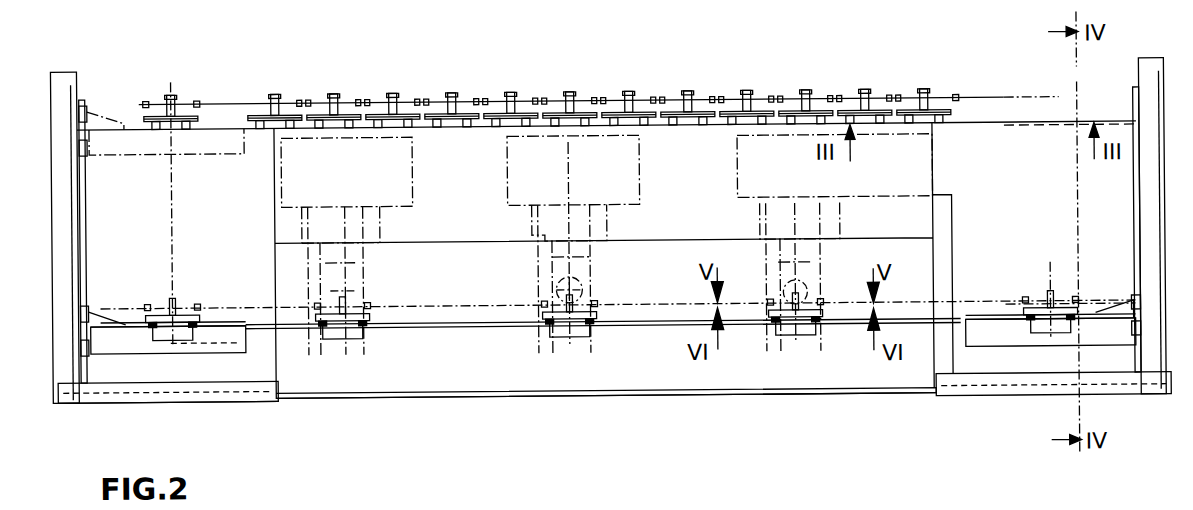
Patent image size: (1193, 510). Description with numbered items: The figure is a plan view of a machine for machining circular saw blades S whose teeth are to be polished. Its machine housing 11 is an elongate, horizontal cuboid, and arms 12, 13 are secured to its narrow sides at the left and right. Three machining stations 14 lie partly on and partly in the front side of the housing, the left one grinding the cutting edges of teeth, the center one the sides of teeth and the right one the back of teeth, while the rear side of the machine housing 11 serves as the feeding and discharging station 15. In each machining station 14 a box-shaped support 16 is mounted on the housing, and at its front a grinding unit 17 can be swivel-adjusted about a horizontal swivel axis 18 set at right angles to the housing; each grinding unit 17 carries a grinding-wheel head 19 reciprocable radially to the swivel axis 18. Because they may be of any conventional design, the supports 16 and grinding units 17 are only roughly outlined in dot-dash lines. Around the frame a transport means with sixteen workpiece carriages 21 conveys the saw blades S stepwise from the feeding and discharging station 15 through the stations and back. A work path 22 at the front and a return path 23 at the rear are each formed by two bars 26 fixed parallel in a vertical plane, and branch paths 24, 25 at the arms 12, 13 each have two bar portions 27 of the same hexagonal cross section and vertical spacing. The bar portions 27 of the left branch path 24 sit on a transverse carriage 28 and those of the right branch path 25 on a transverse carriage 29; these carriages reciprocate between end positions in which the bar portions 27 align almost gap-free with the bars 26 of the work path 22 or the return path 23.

The machine housing 11 is at (420, 402).
The arm 12 is at (136, 400).
The arm 13 is at (1125, 386).
The machining station 14 is at (329, 434).
The feeding and discharging station 15 is at (551, 88).
The box-shaped support 16 is at (396, 173).
The grinding unit 17 is at (366, 229).
The swivel axis 18 is at (340, 270).
The grinding-wheel head 19 is at (355, 296).
The workpiece carriage 21 is at (161, 108).
The work path 22 is at (475, 366).
The return path 23 is at (483, 163).
The branch path 24 is at (223, 307).
The branch path 25 is at (993, 320).
The bar 26 is at (896, 133).
The bar portion 27 is at (237, 322).
The transverse carriage 28 is at (203, 347).
The transverse carriage 29 is at (988, 355).
The circular saw blade S is at (309, 100).